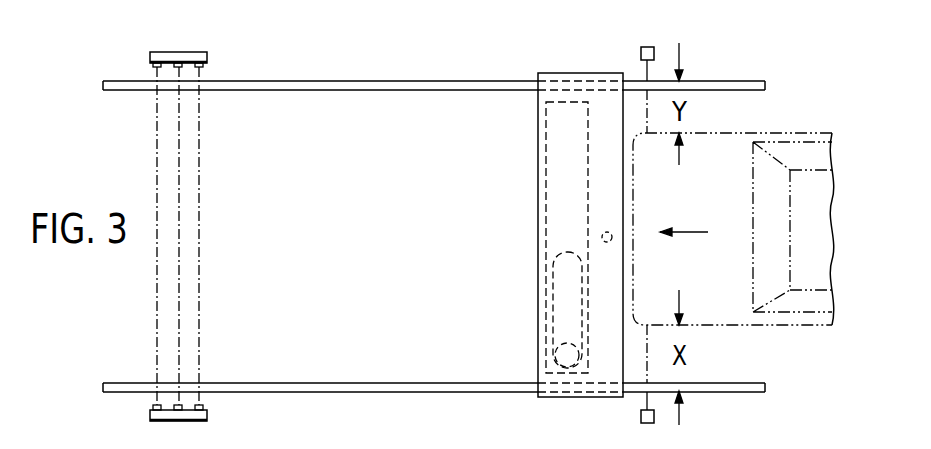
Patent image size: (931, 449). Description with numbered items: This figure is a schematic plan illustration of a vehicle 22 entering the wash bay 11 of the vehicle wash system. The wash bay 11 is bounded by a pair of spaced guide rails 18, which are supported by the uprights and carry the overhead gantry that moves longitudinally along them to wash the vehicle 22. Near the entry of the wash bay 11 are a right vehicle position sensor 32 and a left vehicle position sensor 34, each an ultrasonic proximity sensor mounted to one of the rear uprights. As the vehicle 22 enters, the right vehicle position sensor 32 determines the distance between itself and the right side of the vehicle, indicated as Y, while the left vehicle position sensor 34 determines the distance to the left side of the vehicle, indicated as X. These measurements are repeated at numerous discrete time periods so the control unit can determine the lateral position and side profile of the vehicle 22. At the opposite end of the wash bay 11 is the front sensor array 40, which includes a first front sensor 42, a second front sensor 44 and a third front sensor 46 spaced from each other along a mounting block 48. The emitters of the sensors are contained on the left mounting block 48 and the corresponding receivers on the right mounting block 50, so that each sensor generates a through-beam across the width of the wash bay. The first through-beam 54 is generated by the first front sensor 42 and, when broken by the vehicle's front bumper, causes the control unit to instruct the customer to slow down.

The wash bay 11 is at (403, 127).
The guide rails 18 is at (320, 81).
The vehicle 22 is at (780, 135).
The right vehicle position sensor 32 is at (647, 46).
The left vehicle position sensor 34 is at (641, 417).
The front sensor array 40 is at (178, 44).
The first front sensor 42 is at (205, 69).
The second front sensor 44 is at (180, 67).
The third front sensor 46 is at (152, 65).
The mounting block 48 is at (197, 52).
The right mounting block 50 is at (195, 421).
The first through-beam 54 is at (201, 237).